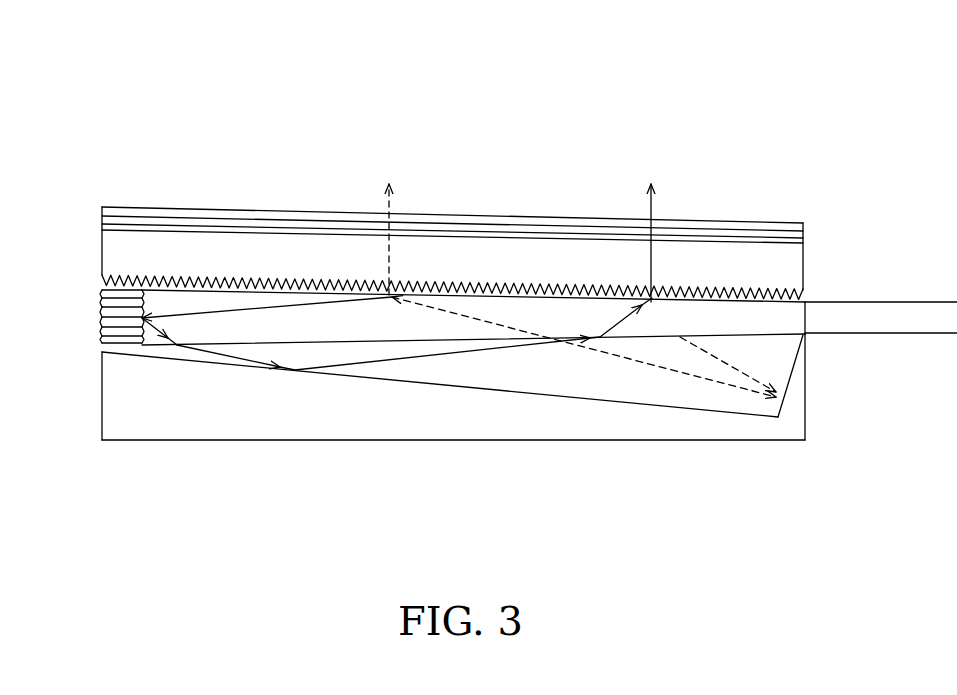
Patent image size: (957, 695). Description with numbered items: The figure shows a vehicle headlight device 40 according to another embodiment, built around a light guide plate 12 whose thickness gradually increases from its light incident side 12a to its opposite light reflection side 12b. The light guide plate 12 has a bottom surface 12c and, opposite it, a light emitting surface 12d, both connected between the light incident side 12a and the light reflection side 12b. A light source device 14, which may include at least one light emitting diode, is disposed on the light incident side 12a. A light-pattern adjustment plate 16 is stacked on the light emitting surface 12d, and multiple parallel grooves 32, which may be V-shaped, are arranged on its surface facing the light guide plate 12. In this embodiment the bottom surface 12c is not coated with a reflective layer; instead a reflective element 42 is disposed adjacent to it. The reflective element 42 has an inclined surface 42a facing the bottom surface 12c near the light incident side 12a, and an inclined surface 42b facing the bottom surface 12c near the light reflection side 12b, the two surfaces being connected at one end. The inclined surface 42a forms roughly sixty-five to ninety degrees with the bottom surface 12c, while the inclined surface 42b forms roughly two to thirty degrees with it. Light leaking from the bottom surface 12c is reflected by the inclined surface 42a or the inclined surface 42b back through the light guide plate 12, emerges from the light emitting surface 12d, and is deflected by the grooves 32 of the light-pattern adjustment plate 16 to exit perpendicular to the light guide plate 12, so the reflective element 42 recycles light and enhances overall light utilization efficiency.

The vehicle headlight device 40 is at (101, 61).
The light-pattern adjustment plate 16 is at (522, 217).
The grooves 32 is at (697, 298).
The light guide plate 12 is at (443, 275).
The light incident side 12a is at (805, 316).
The light reflection side 12b is at (102, 312).
The bottom surface 12c is at (643, 337).
The light emitting surface 12d is at (510, 300).
The light source device 14 is at (886, 302).
The reflective element 42 is at (495, 432).
The inclined surface 42a is at (787, 373).
The inclined surface 42b is at (447, 385).